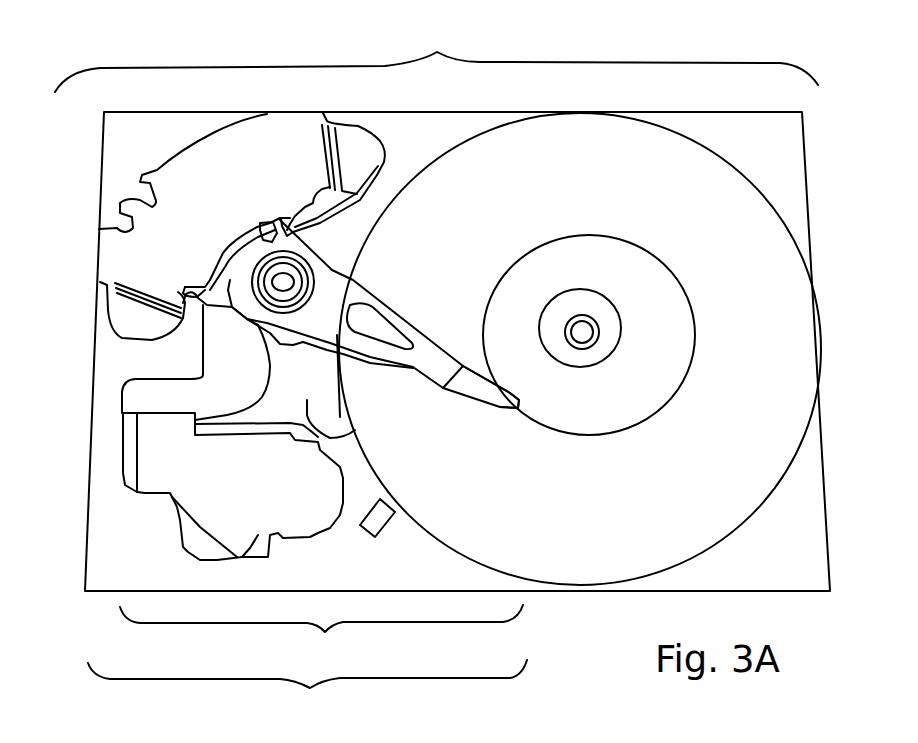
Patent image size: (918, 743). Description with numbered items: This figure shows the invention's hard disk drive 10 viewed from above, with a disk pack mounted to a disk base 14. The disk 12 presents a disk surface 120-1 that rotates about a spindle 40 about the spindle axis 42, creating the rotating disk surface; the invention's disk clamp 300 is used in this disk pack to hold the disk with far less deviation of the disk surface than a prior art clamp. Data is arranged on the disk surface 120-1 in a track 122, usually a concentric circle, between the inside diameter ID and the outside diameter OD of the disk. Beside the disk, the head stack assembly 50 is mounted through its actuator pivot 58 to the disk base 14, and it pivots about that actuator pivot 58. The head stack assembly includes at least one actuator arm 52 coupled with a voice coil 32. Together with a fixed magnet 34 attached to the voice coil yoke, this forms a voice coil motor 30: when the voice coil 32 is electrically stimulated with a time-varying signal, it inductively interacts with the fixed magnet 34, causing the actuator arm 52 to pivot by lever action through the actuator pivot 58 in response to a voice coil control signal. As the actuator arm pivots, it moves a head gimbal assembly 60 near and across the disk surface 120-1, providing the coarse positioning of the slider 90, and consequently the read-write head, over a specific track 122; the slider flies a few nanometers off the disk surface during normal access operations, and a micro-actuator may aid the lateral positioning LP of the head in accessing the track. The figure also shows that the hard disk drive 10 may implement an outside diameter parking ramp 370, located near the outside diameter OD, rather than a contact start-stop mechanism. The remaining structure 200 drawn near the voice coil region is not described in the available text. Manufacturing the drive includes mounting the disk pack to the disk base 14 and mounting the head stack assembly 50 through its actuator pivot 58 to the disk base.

The hard disk drive 10 is at (436, 55).
The disk base 14 is at (102, 181).
The fixed magnet 34 is at (228, 176).
The voice coil 32 is at (278, 224).
The actuator pivot 58 is at (283, 282).
The actuator arm 52 is at (448, 377).
The actuator coil 200 is at (312, 350).
The head gimbal assembly 60 is at (470, 393).
The slider 90 is at (518, 410).
The outside diameter parking ramp 370 is at (383, 525).
The disk 12 is at (580, 349).
The disk surface 120-1 is at (656, 179).
The track 122 is at (700, 318).
The spindle 40 is at (594, 313).
The spindle axis 42 is at (582, 334).
The disk clamp 300 is at (622, 338).
The head stack assembly 50 is at (321, 638).
The voice coil motor 30 is at (307, 694).
The inner diameter ID is at (593, 367).
The outside diameter OD is at (518, 575).
The lateral positioning LP is at (490, 427).